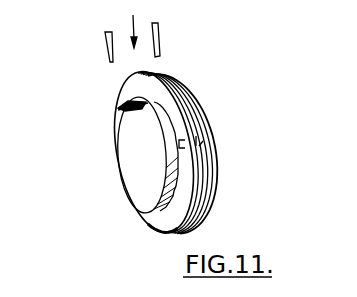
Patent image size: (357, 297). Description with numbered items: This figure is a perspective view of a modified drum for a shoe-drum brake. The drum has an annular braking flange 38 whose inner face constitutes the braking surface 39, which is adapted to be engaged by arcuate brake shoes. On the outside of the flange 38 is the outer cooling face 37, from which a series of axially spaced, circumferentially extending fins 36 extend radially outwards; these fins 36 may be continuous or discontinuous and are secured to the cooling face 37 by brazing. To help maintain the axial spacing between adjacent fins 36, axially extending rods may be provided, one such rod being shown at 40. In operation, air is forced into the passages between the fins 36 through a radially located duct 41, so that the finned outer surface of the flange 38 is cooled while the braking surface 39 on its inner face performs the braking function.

The fins 36 is at (164, 143).
The outer cooling face 37 is at (117, 93).
The annular braking flange 38 is at (127, 182).
The braking surface 39 is at (124, 141).
The axially extending rod 40 is at (193, 150).
The radially located duct 41 is at (104, 48).